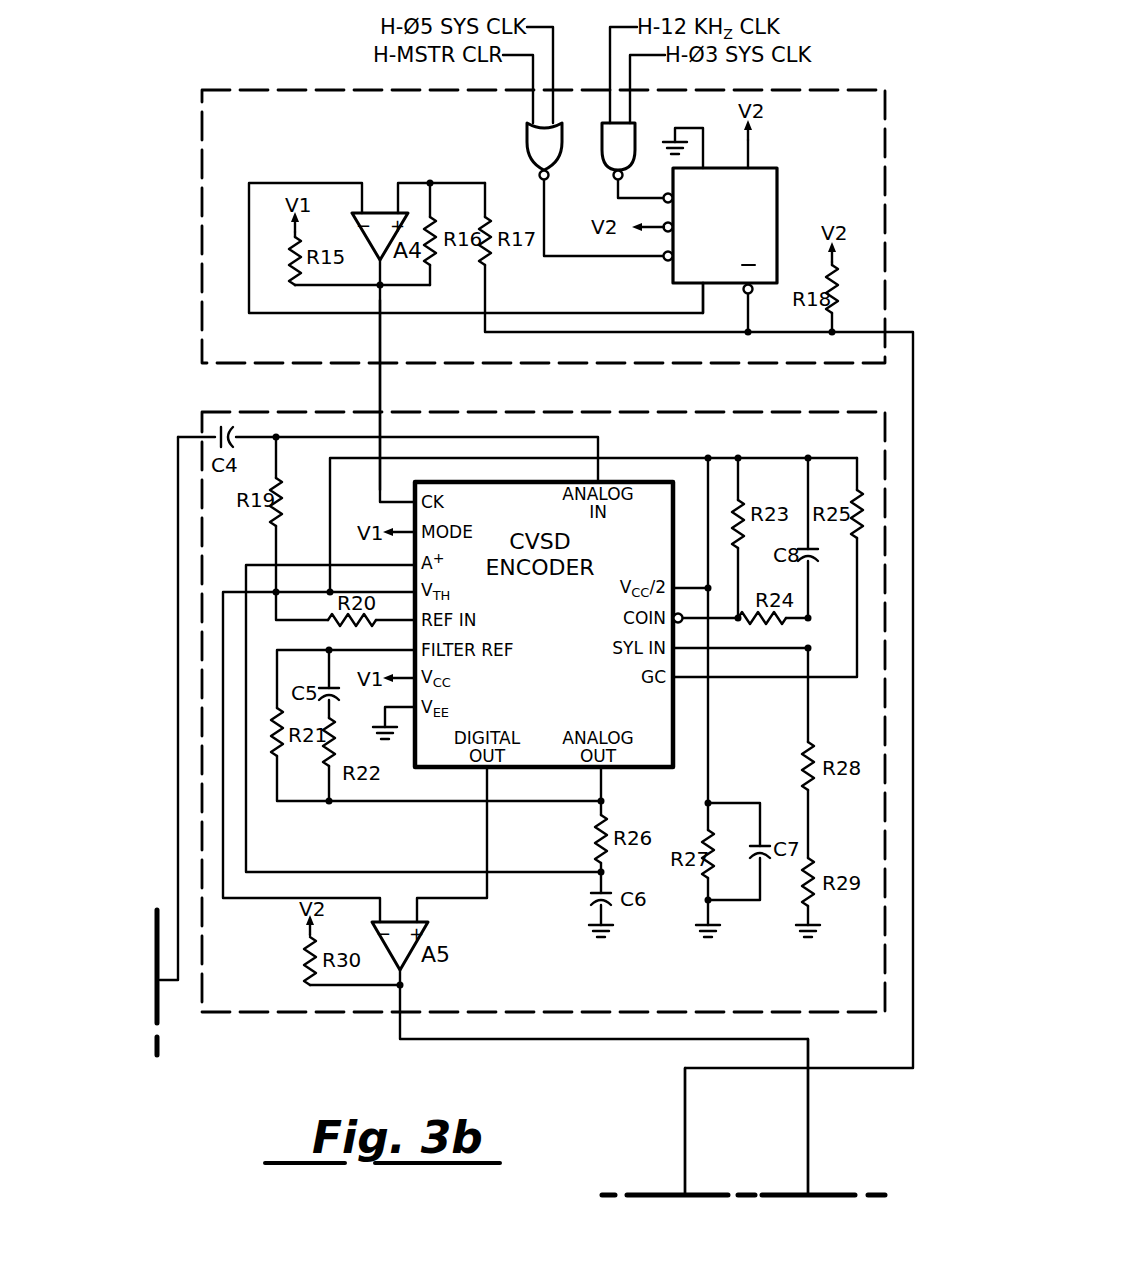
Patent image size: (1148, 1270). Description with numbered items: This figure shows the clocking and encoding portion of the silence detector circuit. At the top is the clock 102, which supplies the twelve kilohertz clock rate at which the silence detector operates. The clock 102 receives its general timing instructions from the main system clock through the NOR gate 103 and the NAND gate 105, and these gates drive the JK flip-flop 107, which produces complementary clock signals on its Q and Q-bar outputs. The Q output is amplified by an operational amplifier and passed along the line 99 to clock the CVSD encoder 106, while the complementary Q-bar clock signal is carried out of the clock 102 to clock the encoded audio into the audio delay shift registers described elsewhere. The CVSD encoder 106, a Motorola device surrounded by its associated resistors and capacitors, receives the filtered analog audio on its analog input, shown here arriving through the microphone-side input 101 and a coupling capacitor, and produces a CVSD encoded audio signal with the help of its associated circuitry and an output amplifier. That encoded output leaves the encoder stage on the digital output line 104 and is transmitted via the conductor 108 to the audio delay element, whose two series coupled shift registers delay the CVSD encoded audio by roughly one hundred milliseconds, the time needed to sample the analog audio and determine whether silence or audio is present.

The clock line 99 is at (382, 393).
The microphone 101 is at (165, 983).
The clock 102 is at (270, 88).
The NOR gate 103 is at (527, 143).
The digital output line 104 is at (685, 1138).
The NAND gate 105 is at (604, 152).
The CVSD encoder 106 is at (233, 410).
The JK flip-flop 107 is at (777, 181).
The conductor 108 is at (808, 1138).